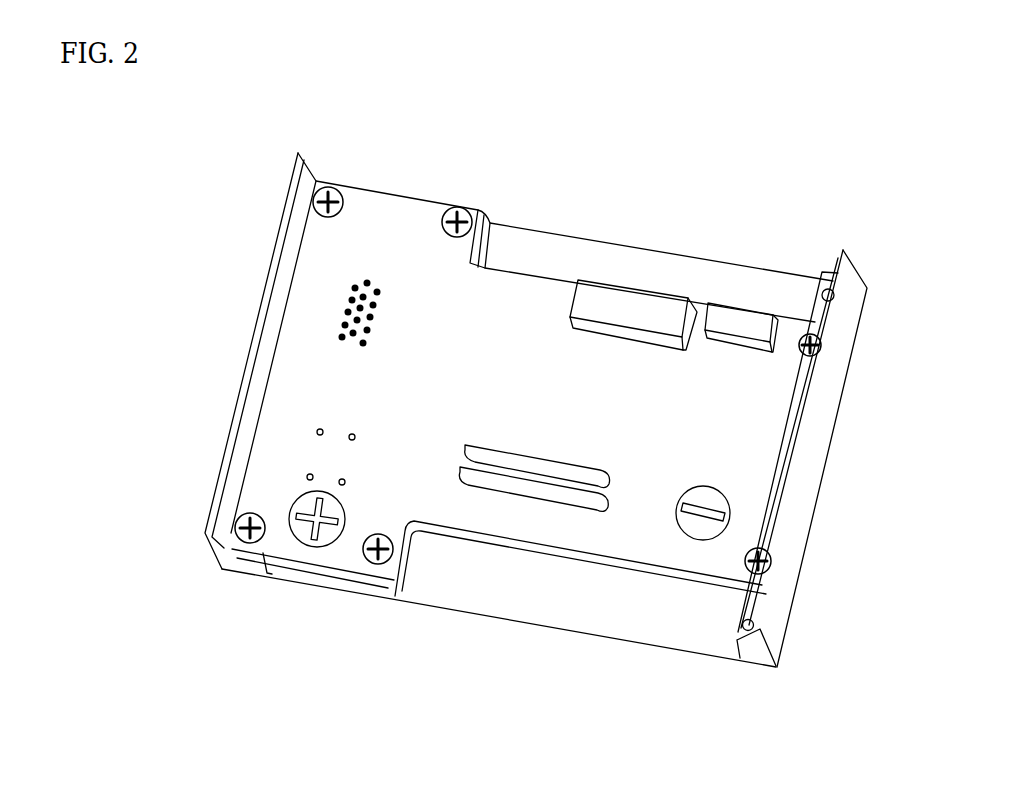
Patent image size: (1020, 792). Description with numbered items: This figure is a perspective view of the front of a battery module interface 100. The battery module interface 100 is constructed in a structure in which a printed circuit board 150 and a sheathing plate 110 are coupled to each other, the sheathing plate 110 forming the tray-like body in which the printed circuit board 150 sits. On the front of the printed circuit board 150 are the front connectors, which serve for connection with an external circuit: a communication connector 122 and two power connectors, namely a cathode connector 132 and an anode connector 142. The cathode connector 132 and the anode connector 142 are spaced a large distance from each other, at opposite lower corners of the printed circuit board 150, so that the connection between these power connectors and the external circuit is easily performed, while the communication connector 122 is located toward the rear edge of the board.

The battery module interface 100 is at (107, 159).
The sheathing plate 110 is at (222, 457).
The communication connector 122 is at (738, 322).
The cathode connector 132 is at (294, 535).
The anode connector 142 is at (727, 497).
The printed circuit board 150 is at (306, 362).